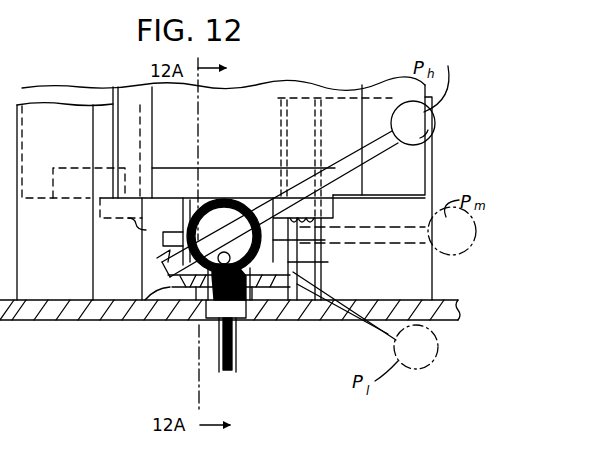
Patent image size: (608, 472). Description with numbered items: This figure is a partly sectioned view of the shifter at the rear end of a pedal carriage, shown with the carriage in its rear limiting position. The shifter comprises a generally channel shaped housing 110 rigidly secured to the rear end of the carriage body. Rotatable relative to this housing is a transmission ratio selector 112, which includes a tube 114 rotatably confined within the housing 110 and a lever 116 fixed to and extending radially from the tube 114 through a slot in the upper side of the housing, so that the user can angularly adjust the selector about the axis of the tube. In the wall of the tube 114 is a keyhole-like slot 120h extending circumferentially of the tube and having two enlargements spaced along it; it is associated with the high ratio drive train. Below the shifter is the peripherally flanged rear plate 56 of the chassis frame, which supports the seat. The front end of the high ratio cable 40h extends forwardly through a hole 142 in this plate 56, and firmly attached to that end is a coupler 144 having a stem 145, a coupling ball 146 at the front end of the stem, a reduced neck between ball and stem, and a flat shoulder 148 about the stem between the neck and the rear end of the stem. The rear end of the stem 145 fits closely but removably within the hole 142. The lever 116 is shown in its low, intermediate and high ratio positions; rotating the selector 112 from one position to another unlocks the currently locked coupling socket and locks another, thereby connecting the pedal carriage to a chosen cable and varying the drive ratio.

The peripherally flanged plate 56 is at (72, 320).
The housing 110 is at (143, 322).
The transmission ratio selector 112 is at (238, 190).
The tube 114 is at (199, 198).
The lever 116 is at (364, 142).
The keyhole-like slot 120h is at (328, 264).
The cable hole 142 is at (236, 336).
The coupler 144 is at (212, 306).
The stem 145 is at (214, 332).
The coupling ball 146 is at (250, 306).
The flat shoulder 148 is at (200, 302).
The cable 40h is at (234, 370).